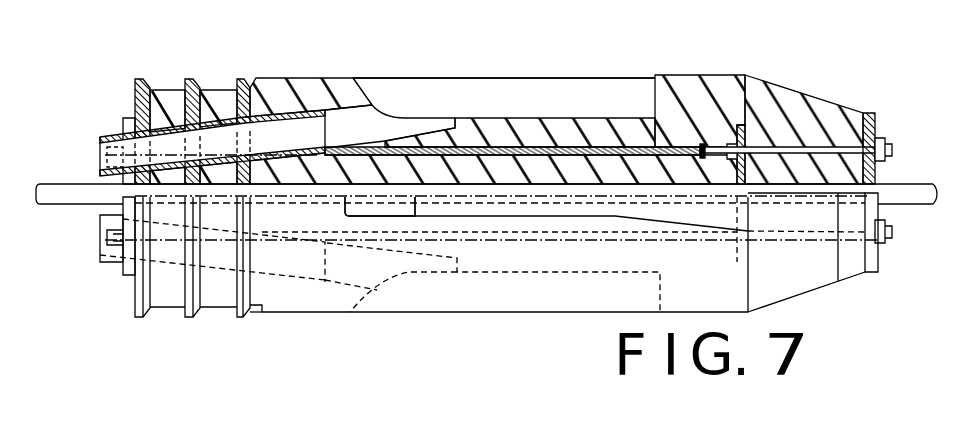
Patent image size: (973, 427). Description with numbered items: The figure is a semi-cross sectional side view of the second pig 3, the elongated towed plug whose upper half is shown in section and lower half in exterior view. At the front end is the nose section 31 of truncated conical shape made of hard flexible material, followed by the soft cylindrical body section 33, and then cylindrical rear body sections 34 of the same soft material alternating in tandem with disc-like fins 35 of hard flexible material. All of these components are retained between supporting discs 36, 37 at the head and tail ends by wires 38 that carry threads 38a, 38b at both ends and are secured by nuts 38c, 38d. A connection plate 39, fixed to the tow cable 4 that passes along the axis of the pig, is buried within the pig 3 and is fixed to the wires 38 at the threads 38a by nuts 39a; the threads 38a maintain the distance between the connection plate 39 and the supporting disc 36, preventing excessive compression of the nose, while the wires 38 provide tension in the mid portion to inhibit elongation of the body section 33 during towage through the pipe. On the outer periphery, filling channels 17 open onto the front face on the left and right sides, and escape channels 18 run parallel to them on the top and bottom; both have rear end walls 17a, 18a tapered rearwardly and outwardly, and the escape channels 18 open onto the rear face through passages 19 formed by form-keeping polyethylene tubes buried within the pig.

The second pig 3 is at (594, 68).
The tow cable 4 is at (925, 184).
The filling channels 17 is at (522, 210).
The rear end walls of filling channels 17a is at (362, 212).
The escape channels 18 is at (482, 98).
The rear end walls of escape channels 18a is at (372, 102).
The passages 19 is at (345, 110).
The nose section 31 is at (872, 125).
The body section 33 is at (690, 80).
The rear body sections 34 is at (170, 90).
The fins 35 is at (143, 79).
The supporting disc 36 is at (875, 272).
The supporting disc 37 is at (125, 118).
The wires 38 is at (545, 145).
The threads 38a is at (790, 150).
The threads 38b is at (212, 196).
The nuts 38c is at (893, 160).
The nuts 38d is at (105, 163).
The connection plate 39 is at (765, 110).
The nuts 39a is at (737, 145).